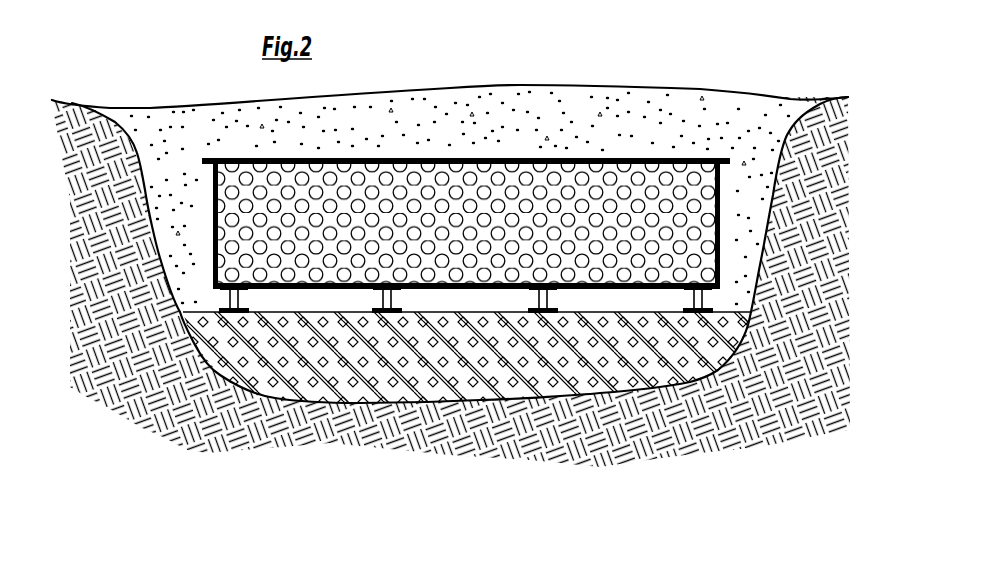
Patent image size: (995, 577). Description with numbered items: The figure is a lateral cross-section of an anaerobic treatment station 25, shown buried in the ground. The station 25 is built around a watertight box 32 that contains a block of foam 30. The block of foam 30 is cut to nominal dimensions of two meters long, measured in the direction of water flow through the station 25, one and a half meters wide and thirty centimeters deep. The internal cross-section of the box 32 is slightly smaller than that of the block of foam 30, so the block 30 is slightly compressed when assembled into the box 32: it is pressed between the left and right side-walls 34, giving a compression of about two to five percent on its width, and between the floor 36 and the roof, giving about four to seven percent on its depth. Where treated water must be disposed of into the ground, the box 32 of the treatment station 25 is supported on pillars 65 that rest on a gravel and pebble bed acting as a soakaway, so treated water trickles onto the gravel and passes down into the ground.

The treatment station 25 is at (648, 157).
The block of foam 30 is at (525, 190).
The watertight box 32 is at (648, 288).
The side-walls 34 is at (213, 220).
The floor 36 is at (467, 288).
The pillars 65 is at (247, 314).